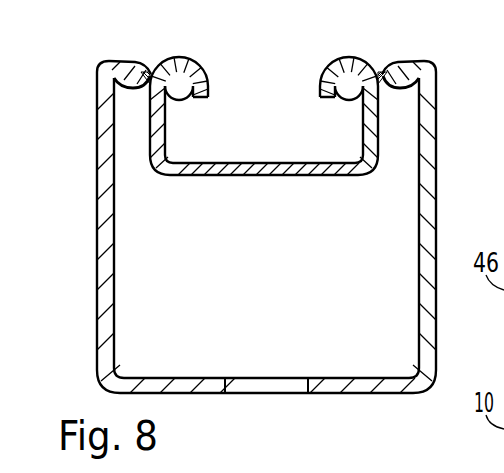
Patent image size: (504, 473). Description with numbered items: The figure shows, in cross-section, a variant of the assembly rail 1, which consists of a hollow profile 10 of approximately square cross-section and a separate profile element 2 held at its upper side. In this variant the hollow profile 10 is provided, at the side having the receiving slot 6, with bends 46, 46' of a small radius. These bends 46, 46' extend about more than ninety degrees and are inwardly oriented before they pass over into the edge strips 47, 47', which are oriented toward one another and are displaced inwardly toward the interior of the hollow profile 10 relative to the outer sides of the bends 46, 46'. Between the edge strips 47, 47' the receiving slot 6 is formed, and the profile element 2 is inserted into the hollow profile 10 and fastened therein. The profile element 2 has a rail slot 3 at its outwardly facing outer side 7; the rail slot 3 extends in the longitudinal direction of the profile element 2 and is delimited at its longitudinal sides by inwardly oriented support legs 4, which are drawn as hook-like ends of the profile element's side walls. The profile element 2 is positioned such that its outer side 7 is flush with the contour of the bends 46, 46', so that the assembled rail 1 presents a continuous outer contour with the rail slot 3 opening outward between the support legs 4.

The assembly rail 1 is at (239, 232).
The profile element 2 is at (264, 125).
The rail slot 3 is at (268, 90).
The support leg 4 is at (200, 70).
The receiving slot 6 is at (375, 68).
The outer side 7 is at (181, 62).
The hollow profile 10 is at (100, 301).
The bend 46 is at (87, 40).
The bend 46' is at (447, 40).
The edge strip 47 is at (130, 48).
The edge strip 47' is at (403, 48).